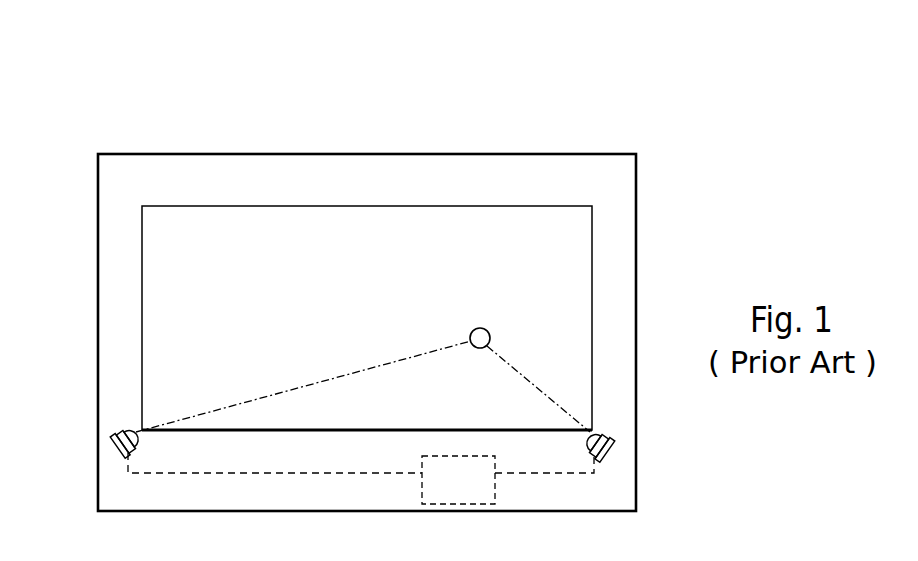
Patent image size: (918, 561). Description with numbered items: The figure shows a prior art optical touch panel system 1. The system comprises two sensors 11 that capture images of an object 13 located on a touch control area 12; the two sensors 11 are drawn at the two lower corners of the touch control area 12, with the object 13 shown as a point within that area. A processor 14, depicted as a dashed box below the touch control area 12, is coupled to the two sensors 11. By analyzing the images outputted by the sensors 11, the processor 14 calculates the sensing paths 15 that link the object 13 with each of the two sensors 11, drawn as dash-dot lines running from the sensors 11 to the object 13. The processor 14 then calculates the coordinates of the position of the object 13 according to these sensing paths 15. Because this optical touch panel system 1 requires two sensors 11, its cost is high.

The optical touch panel system 1 is at (89, 126).
The sensors 11 is at (115, 445).
The touch control area 12 is at (372, 218).
The object 13 is at (490, 336).
The processor 14 is at (457, 506).
The sensing paths 15 is at (543, 386).